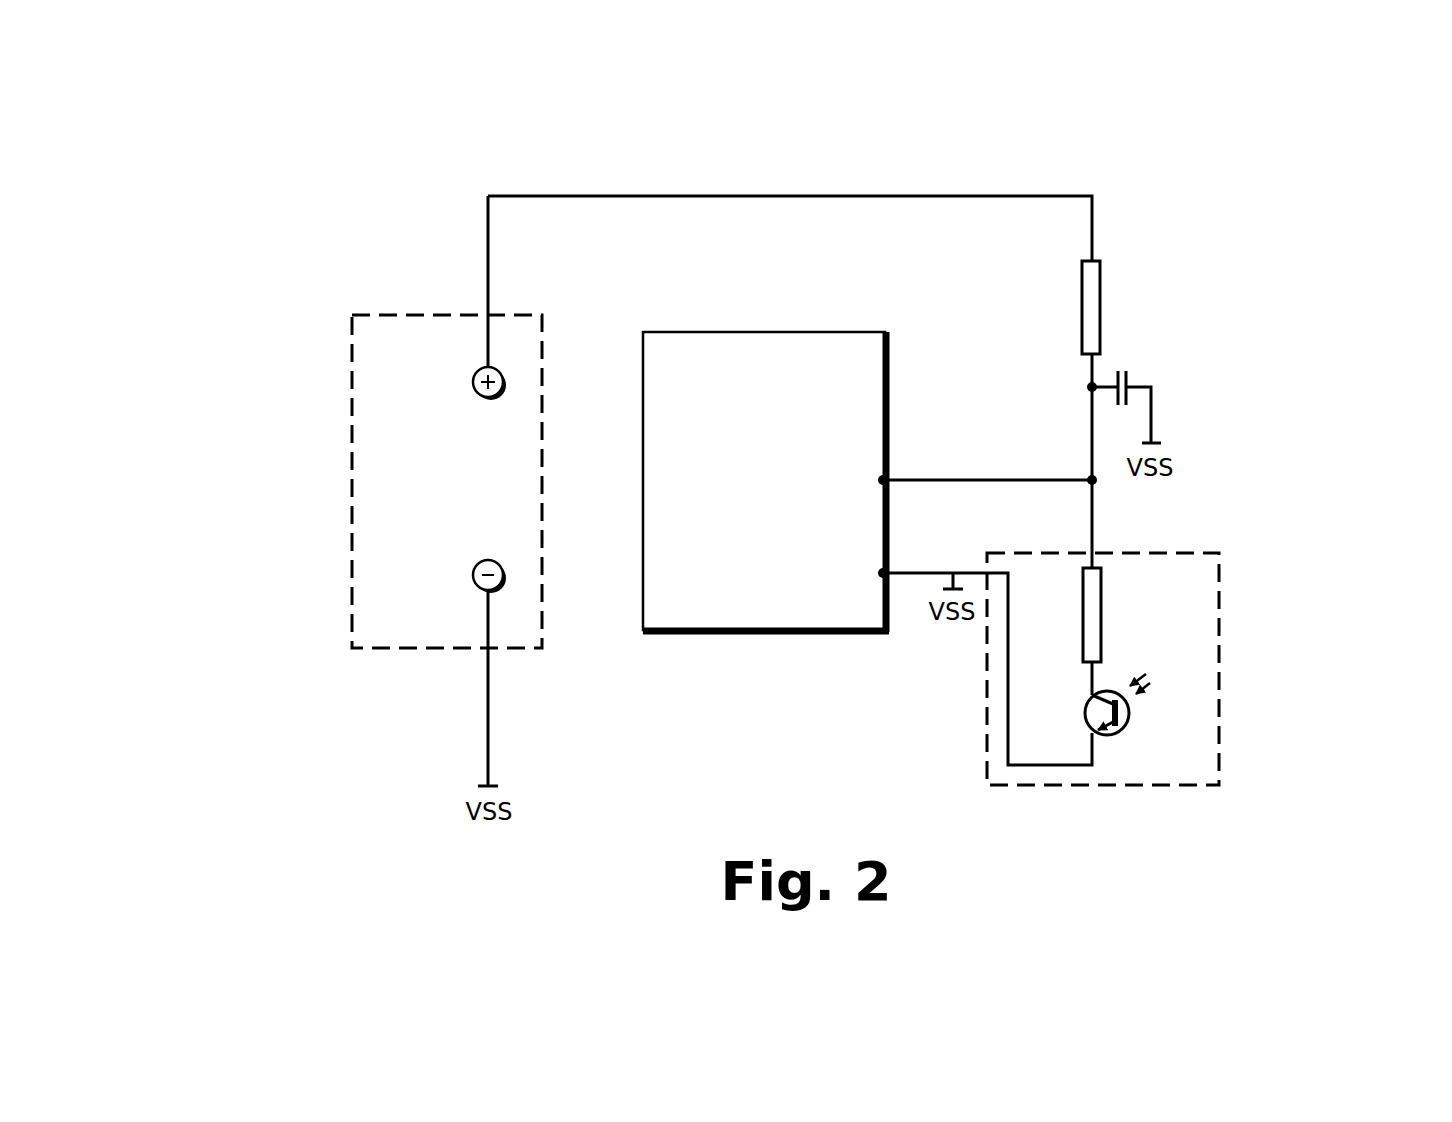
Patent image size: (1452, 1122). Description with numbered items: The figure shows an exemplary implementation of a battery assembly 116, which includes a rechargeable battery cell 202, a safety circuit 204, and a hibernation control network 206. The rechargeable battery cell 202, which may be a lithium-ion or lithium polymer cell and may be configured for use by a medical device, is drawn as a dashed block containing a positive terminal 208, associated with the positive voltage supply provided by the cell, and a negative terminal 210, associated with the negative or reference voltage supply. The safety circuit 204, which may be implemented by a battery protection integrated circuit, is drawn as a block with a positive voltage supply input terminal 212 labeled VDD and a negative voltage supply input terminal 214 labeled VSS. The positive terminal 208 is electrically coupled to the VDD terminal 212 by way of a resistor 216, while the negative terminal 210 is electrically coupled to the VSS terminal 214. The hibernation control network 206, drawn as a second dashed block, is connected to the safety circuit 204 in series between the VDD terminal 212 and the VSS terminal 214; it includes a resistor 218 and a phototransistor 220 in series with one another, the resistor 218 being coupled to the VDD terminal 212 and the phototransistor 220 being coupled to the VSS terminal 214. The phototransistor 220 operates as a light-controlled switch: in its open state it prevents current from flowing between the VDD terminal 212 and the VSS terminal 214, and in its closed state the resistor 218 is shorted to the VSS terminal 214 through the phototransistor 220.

The battery assembly 116 is at (364, 107).
The rechargeable battery cell 202 is at (352, 483).
The safety circuit 204 is at (766, 482).
The hibernation control network 206 is at (1219, 672).
The positive terminal 208 is at (473, 382).
The negative terminal 210 is at (473, 575).
The positive voltage supply input terminal 212 is at (886, 478).
The negative voltage supply input terminal 214 is at (885, 570).
The resistor 216 is at (1100, 308).
The resistor 218 is at (1101, 614).
The phototransistor 220 is at (1127, 722).